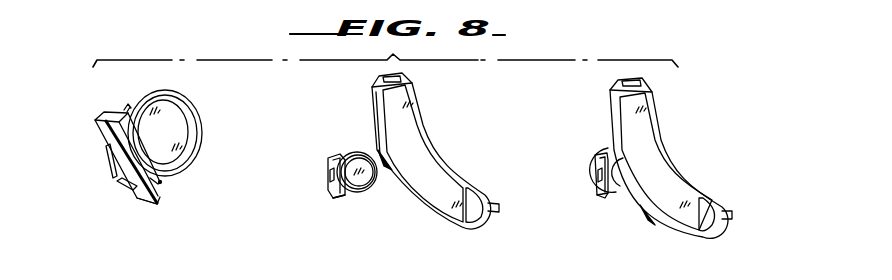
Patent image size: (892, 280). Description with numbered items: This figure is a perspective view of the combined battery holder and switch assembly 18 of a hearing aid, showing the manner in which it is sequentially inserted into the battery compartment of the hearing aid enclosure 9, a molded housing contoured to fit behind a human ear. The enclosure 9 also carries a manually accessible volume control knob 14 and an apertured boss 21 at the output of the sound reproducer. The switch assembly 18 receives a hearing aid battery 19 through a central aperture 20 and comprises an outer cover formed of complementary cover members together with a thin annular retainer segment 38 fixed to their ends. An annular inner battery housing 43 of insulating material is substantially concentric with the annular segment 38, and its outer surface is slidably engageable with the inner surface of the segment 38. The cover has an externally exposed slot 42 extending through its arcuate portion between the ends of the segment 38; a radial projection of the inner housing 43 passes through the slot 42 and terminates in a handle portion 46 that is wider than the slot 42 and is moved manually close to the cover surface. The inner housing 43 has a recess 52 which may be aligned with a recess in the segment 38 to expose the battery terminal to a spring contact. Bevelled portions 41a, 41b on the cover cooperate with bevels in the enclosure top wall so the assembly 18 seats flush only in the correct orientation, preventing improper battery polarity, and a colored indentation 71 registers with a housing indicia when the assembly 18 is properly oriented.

The outer enclosure 9 is at (403, 130).
The volume control knob 14 is at (417, 217).
The battery compartment switch 18 is at (103, 172).
The hearing aid battery 19 is at (177, 130).
The central aperture 20 is at (365, 156).
The apertured boss 21 is at (495, 205).
The annular retainer segment 38 is at (192, 155).
The bevelled portion 41a is at (160, 197).
The bevelled portion 41b is at (106, 118).
The slot 42 is at (110, 147).
The inner battery housing 43 is at (178, 103).
The handle portion 46 is at (133, 182).
The recess 52 is at (128, 107).
The colored indentation 71 is at (160, 183).